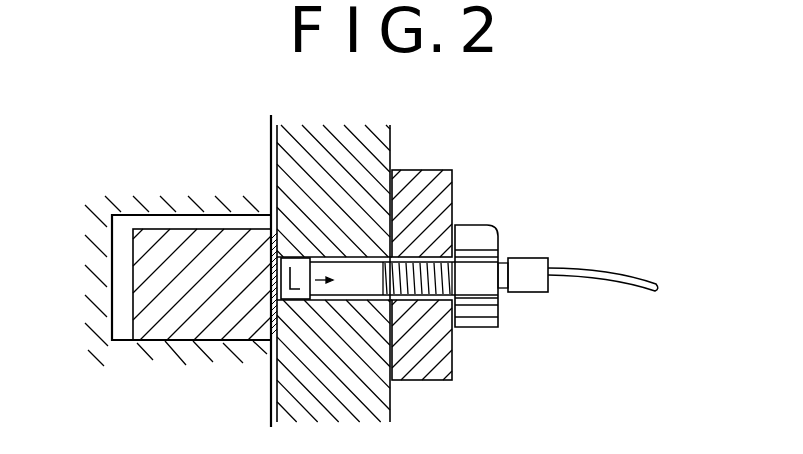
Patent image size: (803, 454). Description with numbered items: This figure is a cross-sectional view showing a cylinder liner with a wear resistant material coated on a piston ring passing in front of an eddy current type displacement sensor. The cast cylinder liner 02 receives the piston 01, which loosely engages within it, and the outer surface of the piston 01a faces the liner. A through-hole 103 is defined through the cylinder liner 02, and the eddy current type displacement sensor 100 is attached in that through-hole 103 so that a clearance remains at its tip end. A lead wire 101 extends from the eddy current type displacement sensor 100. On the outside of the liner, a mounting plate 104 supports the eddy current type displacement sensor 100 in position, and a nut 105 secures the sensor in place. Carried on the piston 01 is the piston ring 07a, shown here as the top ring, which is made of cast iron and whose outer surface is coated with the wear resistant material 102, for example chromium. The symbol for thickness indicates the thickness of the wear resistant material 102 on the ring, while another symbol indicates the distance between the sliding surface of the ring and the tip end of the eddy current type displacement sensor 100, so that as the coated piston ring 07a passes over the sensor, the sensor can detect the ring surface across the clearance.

The piston 01 is at (213, 145).
The outer surface of the piston 01a is at (268, 140).
The cast cylinder liner 02 is at (370, 158).
The piston ring 07a is at (162, 333).
The eddy current type displacement sensor 100 is at (357, 272).
The lead wire 101 is at (605, 277).
The wear resistant material 102 is at (243, 332).
The through-hole 103 is at (308, 256).
The mounting plate 104 is at (455, 367).
The nut 105 is at (465, 238).